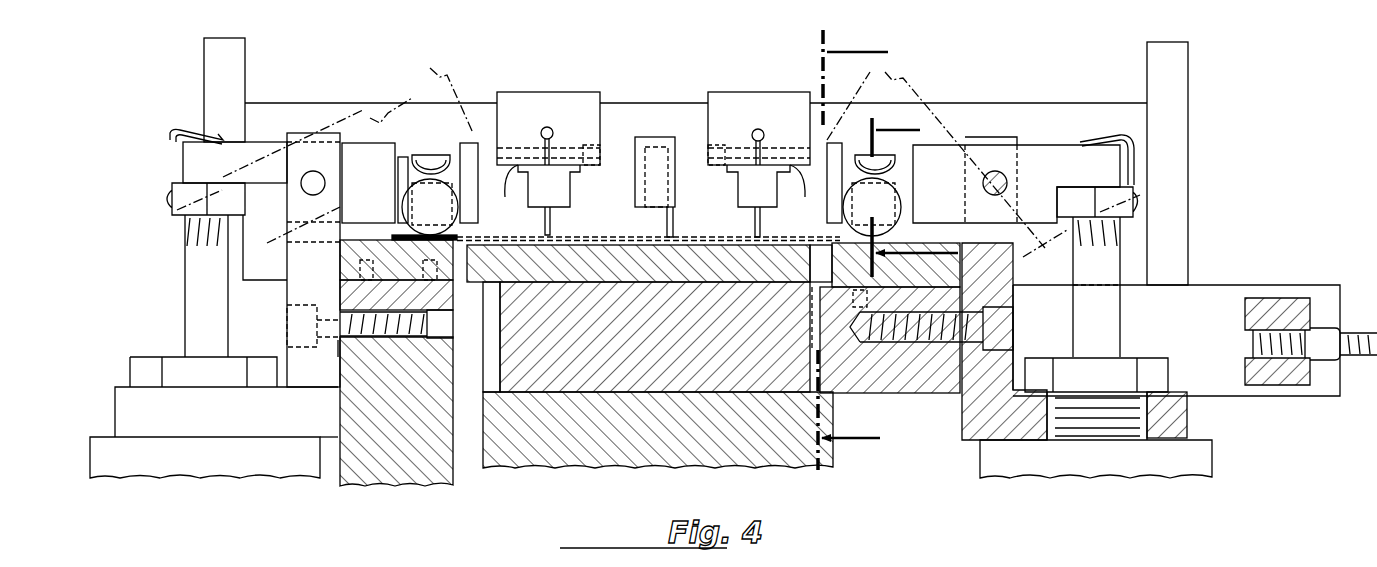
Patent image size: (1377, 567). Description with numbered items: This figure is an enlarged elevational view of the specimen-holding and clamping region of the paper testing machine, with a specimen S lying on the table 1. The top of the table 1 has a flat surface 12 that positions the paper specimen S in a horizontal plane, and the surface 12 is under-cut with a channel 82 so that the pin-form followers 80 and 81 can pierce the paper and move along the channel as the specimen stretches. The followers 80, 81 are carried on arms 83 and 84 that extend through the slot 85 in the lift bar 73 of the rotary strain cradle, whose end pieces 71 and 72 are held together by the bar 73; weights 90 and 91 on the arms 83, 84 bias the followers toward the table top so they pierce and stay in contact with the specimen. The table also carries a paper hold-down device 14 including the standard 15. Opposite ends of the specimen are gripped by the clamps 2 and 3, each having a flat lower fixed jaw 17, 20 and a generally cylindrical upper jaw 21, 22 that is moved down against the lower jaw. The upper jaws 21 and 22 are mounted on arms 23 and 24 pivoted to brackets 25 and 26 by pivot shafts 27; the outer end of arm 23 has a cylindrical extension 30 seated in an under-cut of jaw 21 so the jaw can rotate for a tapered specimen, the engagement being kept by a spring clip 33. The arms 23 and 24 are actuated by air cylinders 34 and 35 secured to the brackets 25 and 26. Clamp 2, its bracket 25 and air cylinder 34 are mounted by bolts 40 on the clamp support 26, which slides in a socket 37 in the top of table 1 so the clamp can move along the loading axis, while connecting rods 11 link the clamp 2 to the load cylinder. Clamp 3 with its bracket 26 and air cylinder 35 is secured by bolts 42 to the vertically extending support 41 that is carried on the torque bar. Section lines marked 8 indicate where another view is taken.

The table 1 is at (718, 440).
The clamp 2 is at (858, 155).
The clamp 3 is at (418, 158).
The section line 8- 8 is at (862, 250).
The connecting rods 11 is at (1350, 330).
The flat surface 12 is at (560, 237).
The paper hold-down device 14 is at (677, 232).
The standard 15 is at (641, 136).
The lower fixed jaw 17 is at (1018, 263).
The lower fixed jaw 20 is at (366, 200).
The upper jaw 21 is at (884, 202).
The upper jaw 22 is at (442, 202).
The arm 23 is at (1048, 150).
The arm 24 is at (205, 170).
The bracket 25 is at (975, 415).
The bracket (clamp support) 26 is at (286, 420).
The pivot shaft 27 is at (307, 172).
The cylindrical extension 30 is at (912, 175).
The spring clip 33 is at (437, 152).
The air cylinder 34 is at (1125, 465).
The air cylinder 35 is at (207, 463).
The socket 37 is at (640, 385).
The bolts 40 is at (927, 347).
The vertically extending support 41 is at (408, 460).
The bolts 42 is at (338, 351).
The end piece 71 is at (1170, 157).
The end piece 72 is at (208, 47).
The lift bar 73 is at (682, 127).
The follower 80 is at (540, 232).
The follower 81 is at (765, 234).
The channel 82 is at (672, 256).
The arm 83 is at (557, 176).
The arm 84 is at (748, 176).
The slot 85 is at (712, 207).
The weight 90 is at (524, 90).
The weight 91 is at (766, 90).
The sheet S is at (593, 237).